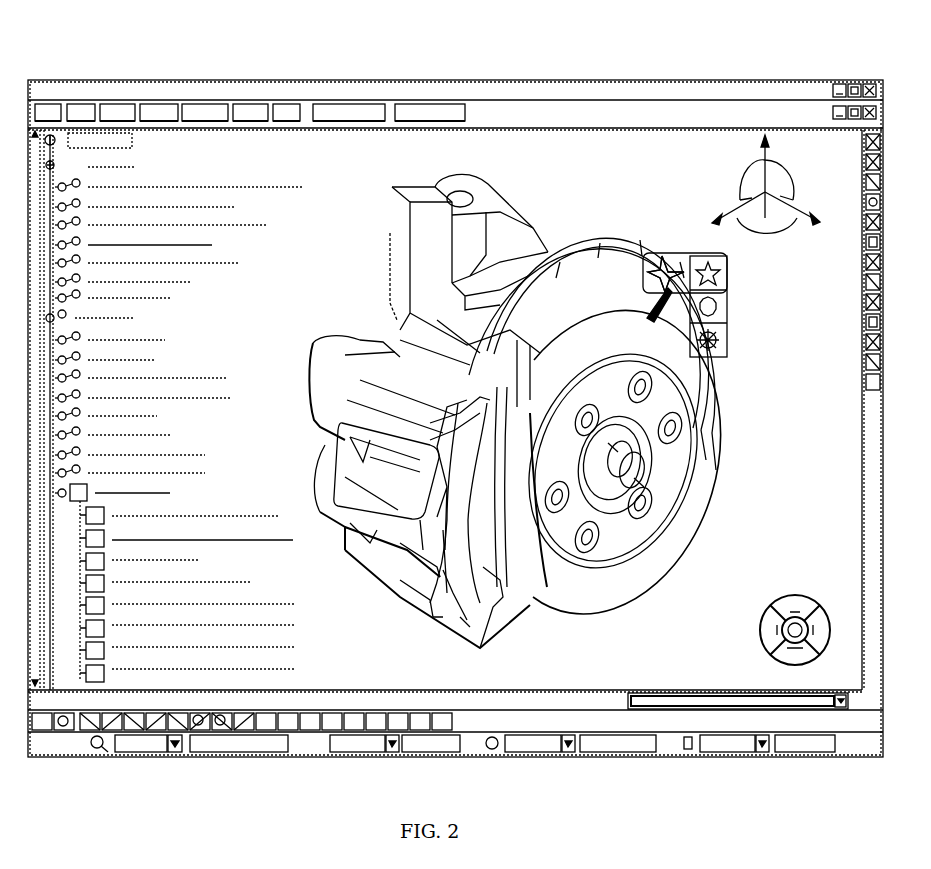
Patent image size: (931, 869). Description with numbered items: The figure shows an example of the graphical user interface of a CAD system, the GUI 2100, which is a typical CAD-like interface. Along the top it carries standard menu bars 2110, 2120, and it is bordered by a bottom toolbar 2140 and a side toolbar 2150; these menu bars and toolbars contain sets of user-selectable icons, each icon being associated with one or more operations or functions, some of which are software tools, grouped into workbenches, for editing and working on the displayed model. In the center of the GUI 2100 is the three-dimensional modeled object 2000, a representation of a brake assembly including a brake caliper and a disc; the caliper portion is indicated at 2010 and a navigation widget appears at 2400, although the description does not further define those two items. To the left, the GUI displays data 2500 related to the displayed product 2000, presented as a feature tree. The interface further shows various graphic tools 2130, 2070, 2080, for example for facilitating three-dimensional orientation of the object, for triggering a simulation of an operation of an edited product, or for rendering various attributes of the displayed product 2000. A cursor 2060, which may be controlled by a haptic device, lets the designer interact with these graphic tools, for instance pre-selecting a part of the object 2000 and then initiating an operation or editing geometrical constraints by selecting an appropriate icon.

The 3D modeled object 2000 is at (355, 252).
The brake caliper 2010 is at (410, 347).
The GUI 2100 is at (700, 620).
The cursor 2060 is at (715, 358).
The graphic tool 2070 is at (680, 255).
The graphic tool 2080 is at (729, 359).
The menu bar 2110 is at (563, 97).
The menu bar 2120 is at (643, 118).
The graphic tool 2130 is at (780, 225).
The bottom toolbar 2140 is at (470, 698).
The side toolbar 2150 is at (862, 398).
The navigation compass widget 2400 is at (785, 583).
The data 2500 is at (152, 390).